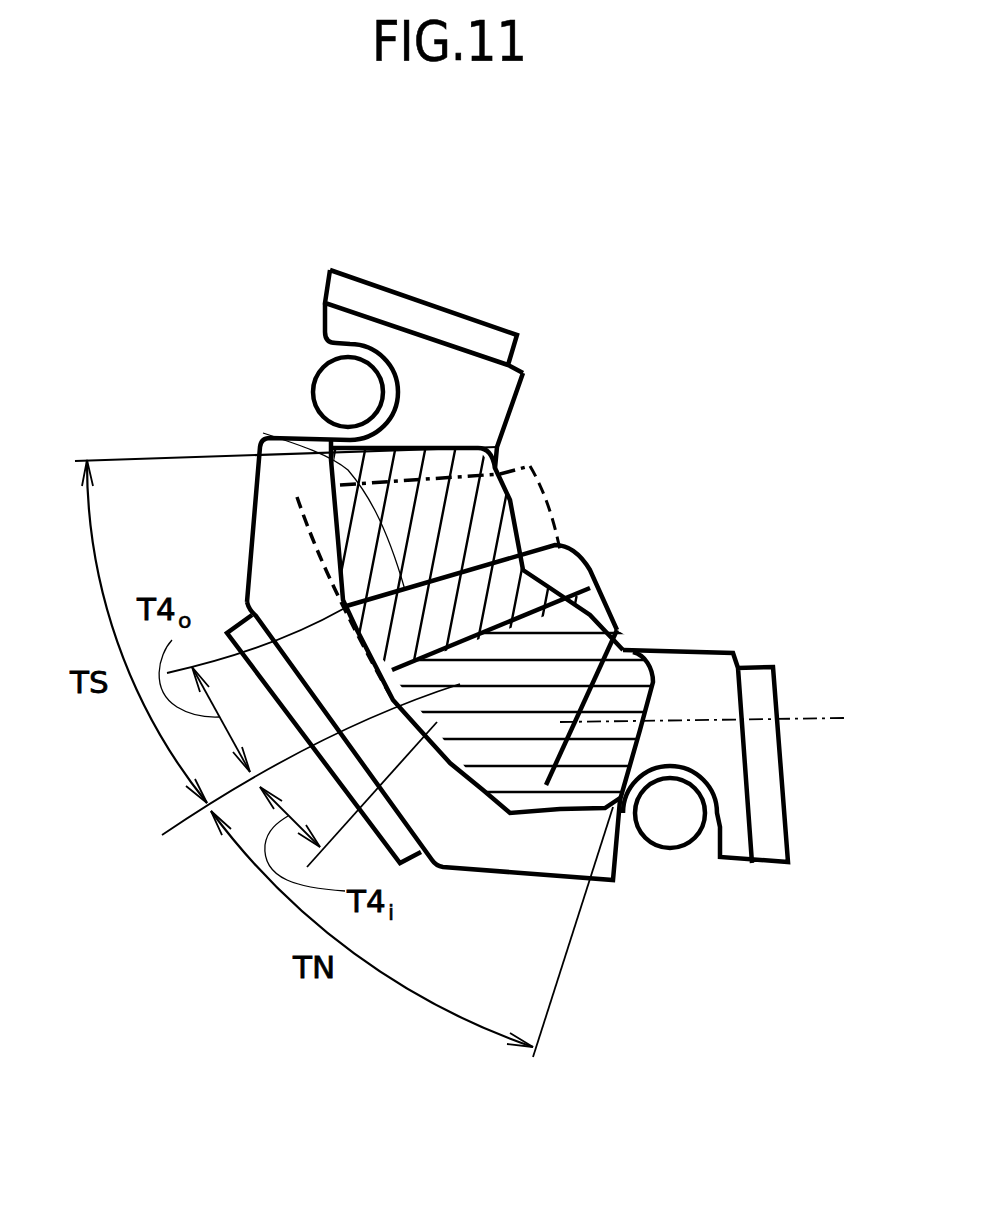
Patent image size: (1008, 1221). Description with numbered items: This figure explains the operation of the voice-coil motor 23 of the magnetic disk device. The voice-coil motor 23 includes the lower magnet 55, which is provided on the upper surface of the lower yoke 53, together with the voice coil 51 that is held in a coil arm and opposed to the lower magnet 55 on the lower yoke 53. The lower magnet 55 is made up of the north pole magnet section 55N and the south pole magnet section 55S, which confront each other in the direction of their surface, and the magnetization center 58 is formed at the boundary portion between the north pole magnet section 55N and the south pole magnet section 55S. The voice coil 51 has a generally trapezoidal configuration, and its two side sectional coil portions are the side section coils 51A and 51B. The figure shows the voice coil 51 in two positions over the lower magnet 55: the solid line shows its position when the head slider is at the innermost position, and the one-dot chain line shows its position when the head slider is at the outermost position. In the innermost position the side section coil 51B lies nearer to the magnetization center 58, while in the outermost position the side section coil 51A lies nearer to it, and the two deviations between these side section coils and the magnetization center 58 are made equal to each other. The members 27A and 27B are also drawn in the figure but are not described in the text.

The voice-coil motor 23 is at (449, 173).
The lower magnet 55 is at (417, 437).
The south pole magnet section 55S is at (447, 457).
The north pole magnet section 55N is at (557, 667).
The magnetization center 58 is at (573, 557).
The support rod 27A is at (683, 823).
The support rod 27B is at (310, 388).
The voice coil 51 is at (297, 497).
The side section coil 51A is at (735, 734).
The side section coil 51B is at (263, 433).
The lower yoke 53 is at (477, 850).